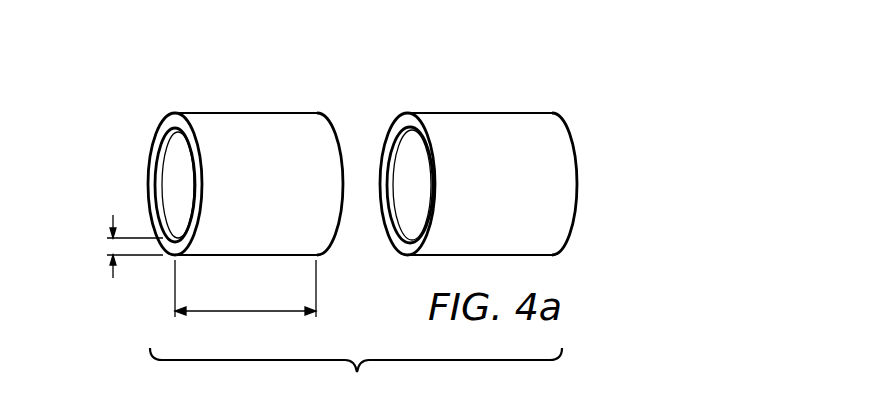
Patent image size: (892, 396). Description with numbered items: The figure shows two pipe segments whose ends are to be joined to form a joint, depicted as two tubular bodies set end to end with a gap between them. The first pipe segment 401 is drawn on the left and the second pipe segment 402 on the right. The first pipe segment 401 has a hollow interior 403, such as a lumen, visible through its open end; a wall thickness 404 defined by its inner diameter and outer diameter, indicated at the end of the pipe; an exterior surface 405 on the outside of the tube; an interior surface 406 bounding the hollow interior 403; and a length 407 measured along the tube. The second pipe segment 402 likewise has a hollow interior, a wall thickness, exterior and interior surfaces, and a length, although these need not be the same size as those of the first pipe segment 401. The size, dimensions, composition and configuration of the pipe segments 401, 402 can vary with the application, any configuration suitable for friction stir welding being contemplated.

The first pipe segment 401 is at (220, 160).
The second pipe segment 402 is at (500, 112).
The hollow interior 403 is at (175, 188).
The wall thickness 404 is at (112, 247).
The exterior surface 405 is at (285, 120).
The interior surface 406 is at (172, 132).
The length 407 is at (243, 312).